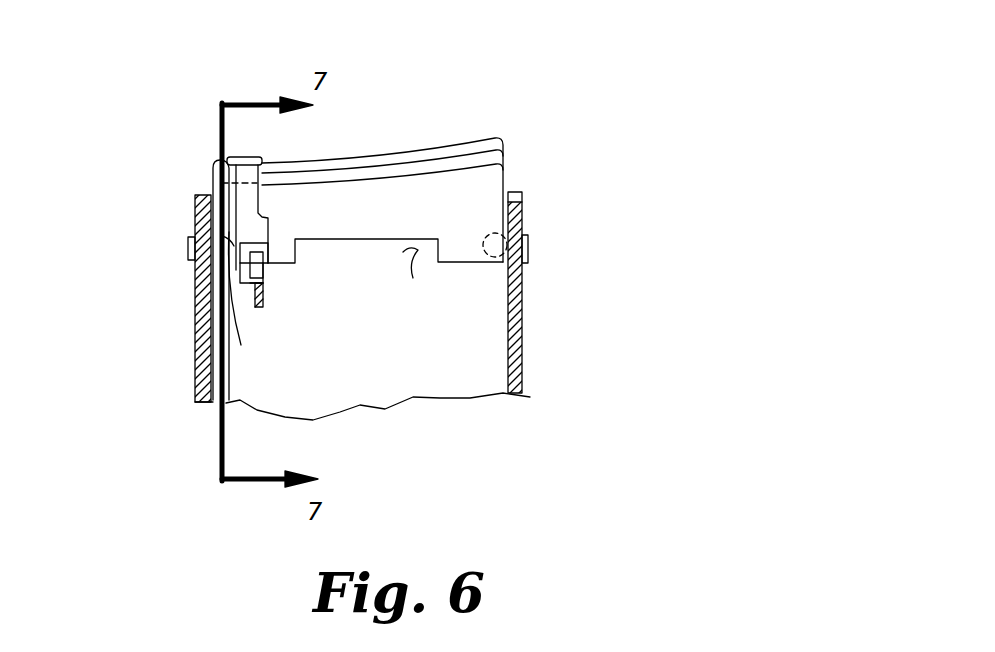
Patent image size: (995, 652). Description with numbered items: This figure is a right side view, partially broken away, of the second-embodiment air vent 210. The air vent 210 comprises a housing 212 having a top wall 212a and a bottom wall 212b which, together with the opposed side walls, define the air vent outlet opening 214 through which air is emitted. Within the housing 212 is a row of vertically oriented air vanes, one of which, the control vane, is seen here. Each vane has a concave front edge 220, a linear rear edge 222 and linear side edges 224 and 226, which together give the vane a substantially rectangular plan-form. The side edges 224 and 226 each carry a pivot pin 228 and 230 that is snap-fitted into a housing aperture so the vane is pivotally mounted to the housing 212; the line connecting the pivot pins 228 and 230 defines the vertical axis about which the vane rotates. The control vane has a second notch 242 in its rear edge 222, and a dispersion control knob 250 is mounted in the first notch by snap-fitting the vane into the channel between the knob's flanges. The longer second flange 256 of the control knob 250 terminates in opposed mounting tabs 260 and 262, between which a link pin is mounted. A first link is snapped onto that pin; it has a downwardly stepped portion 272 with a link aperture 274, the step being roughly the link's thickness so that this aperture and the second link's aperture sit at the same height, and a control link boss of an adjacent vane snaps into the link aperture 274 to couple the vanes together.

The air vent 210 is at (614, 88).
The housing 212 is at (522, 348).
The top wall 212a is at (522, 300).
The bottom wall 212b is at (196, 362).
The air vent outlet opening 214 is at (360, 385).
The front edge 220 is at (455, 163).
The rear edge 222 is at (377, 240).
The side edge 224 is at (213, 187).
The side edge 226 is at (503, 171).
The pivot pin 228 is at (190, 248).
The pivot pin 230 is at (512, 232).
The second notch 242 is at (430, 276).
The dispersion control knob 250 is at (262, 152).
The second flange 256 is at (248, 206).
The mounting tab 260 is at (241, 345).
The mounting tab 262 is at (268, 275).
The downwardly stepped portion 272 is at (262, 304).
The link aperture 274 is at (266, 296).